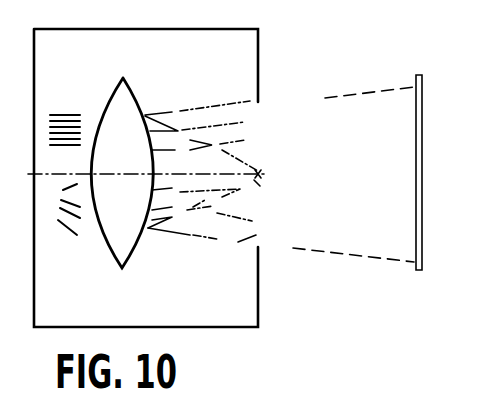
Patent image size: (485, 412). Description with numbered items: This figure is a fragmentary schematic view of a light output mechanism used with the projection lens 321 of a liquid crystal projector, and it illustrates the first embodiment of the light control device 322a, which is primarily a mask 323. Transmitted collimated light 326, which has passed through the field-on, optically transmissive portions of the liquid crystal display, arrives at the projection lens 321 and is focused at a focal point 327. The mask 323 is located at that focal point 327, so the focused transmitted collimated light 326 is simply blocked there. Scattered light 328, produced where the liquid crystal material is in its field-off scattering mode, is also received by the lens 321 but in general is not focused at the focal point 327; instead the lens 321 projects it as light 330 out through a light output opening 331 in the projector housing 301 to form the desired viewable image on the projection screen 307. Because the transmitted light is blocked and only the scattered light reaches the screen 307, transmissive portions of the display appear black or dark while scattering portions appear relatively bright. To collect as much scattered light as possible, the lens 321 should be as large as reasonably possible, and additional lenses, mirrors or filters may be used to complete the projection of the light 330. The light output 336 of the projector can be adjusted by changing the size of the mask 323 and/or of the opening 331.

The housing 301 is at (260, 336).
The projection screen 307 is at (416, 250).
The projection lens 321 is at (112, 262).
The light control device 322a is at (280, 107).
The mask 323 is at (258, 172).
The transmitted collimated light 326 is at (75, 107).
The focal point 327 is at (259, 183).
The scattered light 328 is at (61, 231).
The light 330 is at (182, 237).
The light output opening 331 is at (250, 238).
The light output 336 is at (357, 263).